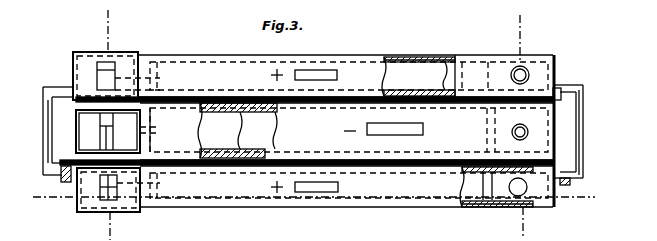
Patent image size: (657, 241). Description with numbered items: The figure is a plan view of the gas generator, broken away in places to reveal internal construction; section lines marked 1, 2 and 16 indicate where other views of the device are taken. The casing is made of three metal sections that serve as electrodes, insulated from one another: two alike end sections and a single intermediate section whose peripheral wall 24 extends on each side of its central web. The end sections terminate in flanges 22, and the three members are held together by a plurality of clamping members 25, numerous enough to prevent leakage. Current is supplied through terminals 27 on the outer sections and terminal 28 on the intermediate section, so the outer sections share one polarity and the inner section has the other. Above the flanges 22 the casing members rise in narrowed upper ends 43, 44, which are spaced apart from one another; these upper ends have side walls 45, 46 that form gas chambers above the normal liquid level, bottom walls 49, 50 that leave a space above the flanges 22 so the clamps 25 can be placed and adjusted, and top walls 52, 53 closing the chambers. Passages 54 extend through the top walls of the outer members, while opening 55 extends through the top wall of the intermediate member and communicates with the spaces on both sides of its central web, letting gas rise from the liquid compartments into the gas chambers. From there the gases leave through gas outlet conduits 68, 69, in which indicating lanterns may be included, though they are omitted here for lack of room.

The section line 1- 1 is at (60, 200).
The section line 2- 2 is at (72, 25).
The section line 16- 16 is at (495, 33).
The flange 22 is at (47, 93).
The peripheral wall 24 is at (64, 131).
The clamping member 25 is at (48, 121).
The terminal 27 is at (337, 75).
The terminal 28 is at (423, 131).
The upper end of outer casing member 43 is at (214, 73).
The upper end of intermediate casing member 44 is at (307, 134).
The side wall 45 is at (481, 218).
The side wall 46 is at (237, 130).
The bottom wall 49 is at (418, 58).
The bottom wall 50 is at (204, 135).
The top wall 52 is at (403, 58).
The top wall 53 is at (257, 130).
The passage 54 is at (527, 193).
The opening 55 is at (513, 132).
The gas outlet conduit 68 is at (527, 71).
The gas outlet conduit 69 is at (557, 93).